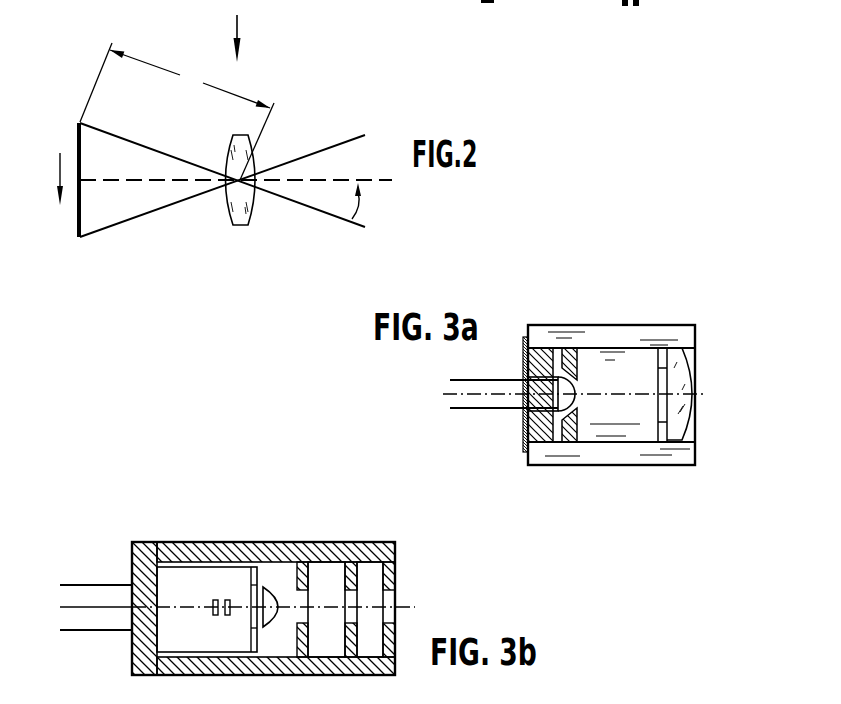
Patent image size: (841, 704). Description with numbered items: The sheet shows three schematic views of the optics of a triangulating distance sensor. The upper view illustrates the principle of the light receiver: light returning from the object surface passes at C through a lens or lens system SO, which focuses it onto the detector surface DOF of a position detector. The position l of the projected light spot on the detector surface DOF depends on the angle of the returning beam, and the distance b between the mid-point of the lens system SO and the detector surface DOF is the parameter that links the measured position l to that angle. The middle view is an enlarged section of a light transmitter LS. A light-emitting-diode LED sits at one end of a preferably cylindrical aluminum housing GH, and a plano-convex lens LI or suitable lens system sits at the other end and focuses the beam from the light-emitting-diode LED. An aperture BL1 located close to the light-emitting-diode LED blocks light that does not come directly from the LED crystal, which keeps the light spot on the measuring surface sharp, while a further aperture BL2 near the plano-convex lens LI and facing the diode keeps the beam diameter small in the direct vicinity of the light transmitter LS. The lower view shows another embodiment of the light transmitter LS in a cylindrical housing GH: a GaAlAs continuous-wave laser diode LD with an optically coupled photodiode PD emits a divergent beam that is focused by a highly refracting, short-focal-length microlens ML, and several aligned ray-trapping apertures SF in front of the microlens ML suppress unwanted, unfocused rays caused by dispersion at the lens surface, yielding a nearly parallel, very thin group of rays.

In FIG. 2, the detector surface DOF is at (94, 252).
In FIG. 2, the lens or lens system SO is at (243, 216).
In FIG. 2, the distance between lens mid-point and detector surface b is at (177, 111).
In FIG. 2, the location of pinhole or lens in light receiver C is at (244, 32).
In FIG. 2, the position of projected light on detector surface l is at (50, 178).
In FIG. 3a, the housing GH is at (667, 338).
In FIG. 3b, the housing GH is at (188, 552).
In FIG. 3a, the light transmitter LS is at (540, 302).
In FIG. 3b, the light transmitter LS is at (339, 523).
In FIG. 3a, the light-emitting-diode LED is at (527, 434).
In FIG. 3a, the aperture BL1 is at (568, 444).
In FIG. 3a, the further aperture BL2 is at (663, 430).
In FIG. 3a, the plano-convex lens LI is at (678, 424).
In FIG. 3b, the microlens ML is at (278, 593).
In FIG. 3b, the ray-trapping apertures SF is at (345, 608).
In FIG. 3b, the photodiode PD is at (211, 621).
In FIG. 3b, the Laserdiode LD is at (234, 621).